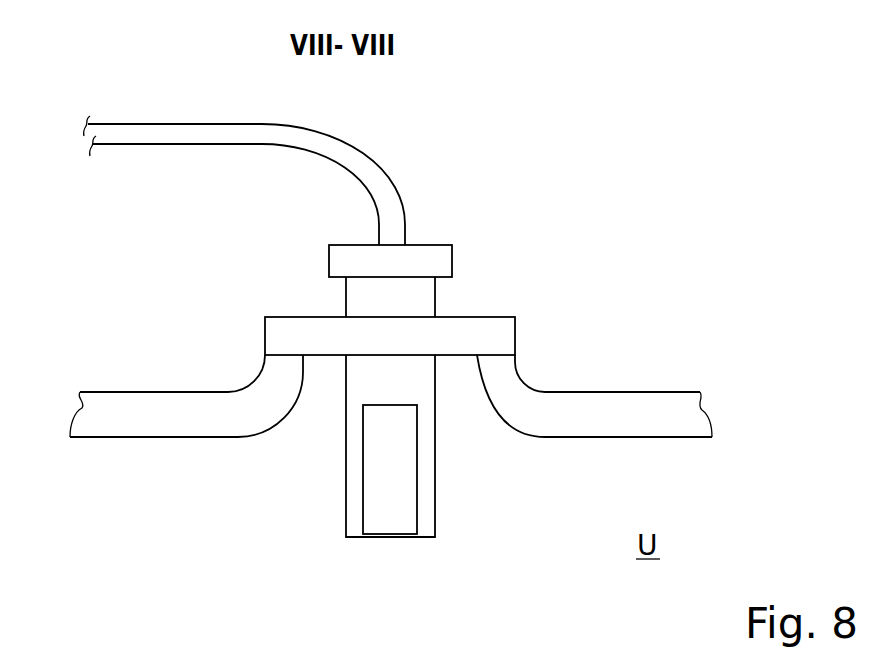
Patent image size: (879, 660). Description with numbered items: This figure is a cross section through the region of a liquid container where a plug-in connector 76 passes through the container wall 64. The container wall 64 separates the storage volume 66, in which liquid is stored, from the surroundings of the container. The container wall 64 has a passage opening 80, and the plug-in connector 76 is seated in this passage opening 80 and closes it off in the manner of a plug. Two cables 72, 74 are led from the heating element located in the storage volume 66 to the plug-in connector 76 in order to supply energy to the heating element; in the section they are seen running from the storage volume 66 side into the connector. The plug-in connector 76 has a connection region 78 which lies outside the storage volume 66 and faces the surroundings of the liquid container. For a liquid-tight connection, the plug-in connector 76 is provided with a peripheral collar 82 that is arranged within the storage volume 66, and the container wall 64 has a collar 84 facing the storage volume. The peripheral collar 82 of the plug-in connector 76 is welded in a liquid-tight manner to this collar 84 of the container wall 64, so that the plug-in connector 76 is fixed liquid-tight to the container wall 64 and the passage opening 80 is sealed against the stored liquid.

The container wall 64 is at (122, 405).
The storage volume 66 is at (612, 318).
The cable 72 is at (137, 124).
The cable 74 is at (191, 144).
The plug-in connector 76 is at (404, 301).
The connection region 78 is at (353, 482).
The passage opening 80 is at (314, 416).
The peripheral collar 82 is at (465, 335).
The collar 84 is at (505, 370).